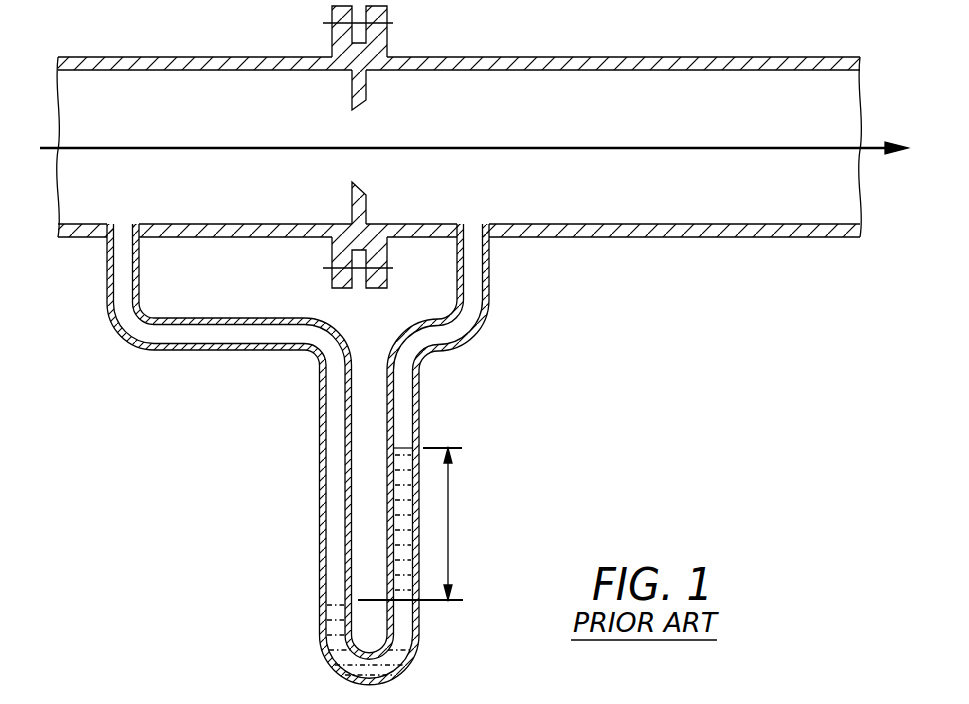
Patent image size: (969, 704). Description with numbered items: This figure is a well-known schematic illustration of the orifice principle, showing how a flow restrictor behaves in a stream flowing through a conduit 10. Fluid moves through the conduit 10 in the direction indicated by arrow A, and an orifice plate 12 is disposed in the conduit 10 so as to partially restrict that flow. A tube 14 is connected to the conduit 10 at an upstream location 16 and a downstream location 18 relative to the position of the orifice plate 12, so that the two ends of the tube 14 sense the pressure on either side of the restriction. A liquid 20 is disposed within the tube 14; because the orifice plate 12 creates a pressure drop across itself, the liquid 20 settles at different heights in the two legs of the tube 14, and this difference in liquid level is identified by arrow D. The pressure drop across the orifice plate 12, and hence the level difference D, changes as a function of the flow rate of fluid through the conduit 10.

The conduit 10 is at (608, 58).
The orifice plate 12 is at (367, 86).
The tube 14 is at (190, 336).
The upstream location 16 is at (121, 231).
The downstream location 18 is at (470, 232).
The liquid 20 is at (404, 632).
The arrow A is at (666, 148).
The arrow D is at (450, 528).